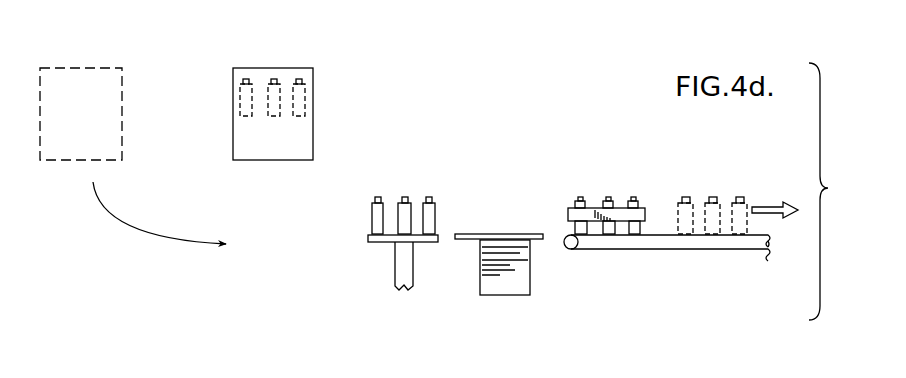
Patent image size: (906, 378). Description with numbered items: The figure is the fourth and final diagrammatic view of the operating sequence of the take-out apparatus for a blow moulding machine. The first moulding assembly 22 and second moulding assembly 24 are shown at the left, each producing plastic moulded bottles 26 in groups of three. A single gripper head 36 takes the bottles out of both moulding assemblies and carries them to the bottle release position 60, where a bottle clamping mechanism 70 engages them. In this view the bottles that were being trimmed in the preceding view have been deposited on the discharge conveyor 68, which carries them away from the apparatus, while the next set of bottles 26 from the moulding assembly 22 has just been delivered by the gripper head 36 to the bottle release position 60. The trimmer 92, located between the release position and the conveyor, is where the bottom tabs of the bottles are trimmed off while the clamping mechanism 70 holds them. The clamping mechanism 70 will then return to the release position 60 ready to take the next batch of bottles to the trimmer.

The first moulding assembly 22 is at (100, 66).
The second moulding assembly 24 is at (243, 65).
The plastic moulded bottles 26 is at (254, 78).
The bottle release position 60 is at (401, 144).
The gripper head 36 is at (388, 247).
The trimmer 92 is at (499, 231).
The discharge conveyor 68 is at (652, 257).
The bottle clamping mechanism 70 is at (622, 210).